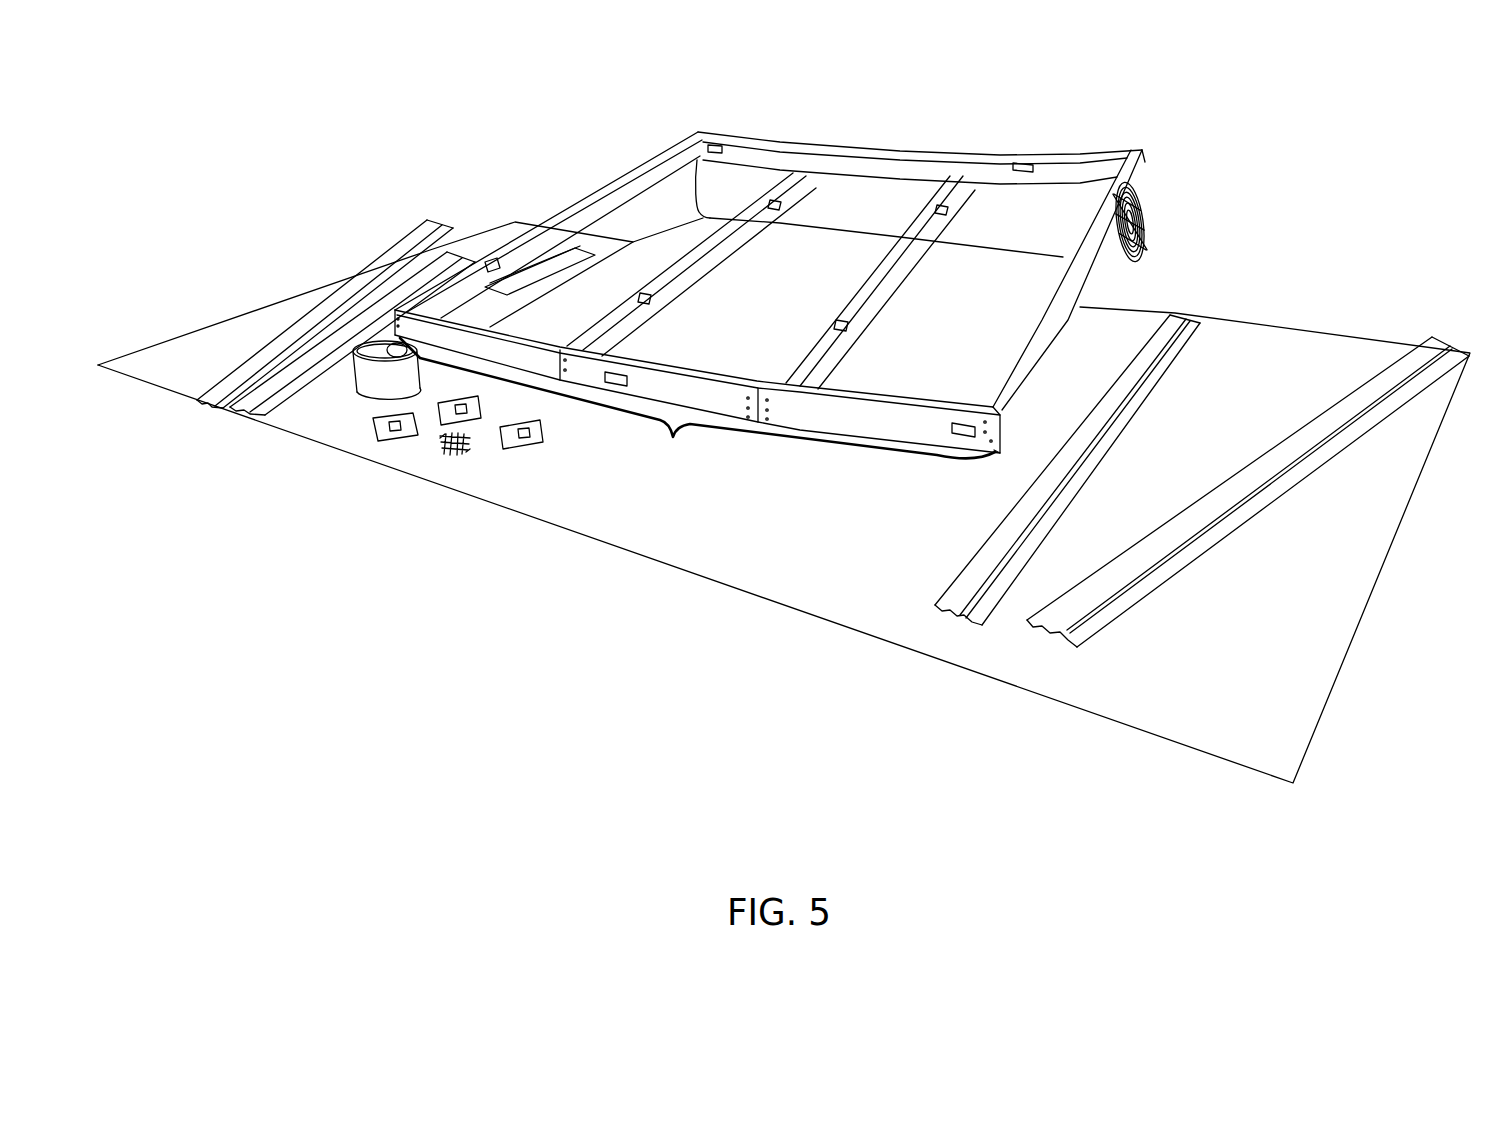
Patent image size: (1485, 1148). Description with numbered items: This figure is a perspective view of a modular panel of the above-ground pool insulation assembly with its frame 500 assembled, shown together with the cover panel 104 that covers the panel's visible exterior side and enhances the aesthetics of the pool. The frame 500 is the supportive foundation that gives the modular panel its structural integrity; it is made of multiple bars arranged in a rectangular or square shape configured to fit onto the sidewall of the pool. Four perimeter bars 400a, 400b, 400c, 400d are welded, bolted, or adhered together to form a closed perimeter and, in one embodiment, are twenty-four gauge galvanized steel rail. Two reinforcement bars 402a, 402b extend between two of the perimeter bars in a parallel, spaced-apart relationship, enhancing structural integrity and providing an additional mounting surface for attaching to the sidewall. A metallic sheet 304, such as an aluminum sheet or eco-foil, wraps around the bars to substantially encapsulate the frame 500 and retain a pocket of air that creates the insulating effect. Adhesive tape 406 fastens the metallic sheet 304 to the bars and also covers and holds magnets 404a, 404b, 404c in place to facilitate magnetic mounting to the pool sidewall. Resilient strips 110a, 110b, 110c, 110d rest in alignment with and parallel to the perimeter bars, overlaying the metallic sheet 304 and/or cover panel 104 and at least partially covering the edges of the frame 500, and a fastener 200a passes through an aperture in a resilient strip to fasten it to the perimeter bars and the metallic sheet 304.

The cover panel 104 is at (1095, 389).
The resilient strip 110a is at (273, 343).
The resilient strip 110b is at (288, 409).
The resilient strip 110c is at (1172, 352).
The resilient strip 110d is at (1298, 437).
The fastener 200a is at (452, 455).
The metallic sheet 304 is at (1013, 318).
The perimeter bar 400a is at (620, 172).
The perimeter bar 400b is at (1087, 264).
The perimeter bar 400c is at (898, 152).
The perimeter bar 400d is at (933, 441).
The reinforcement bar 402a is at (790, 177).
The reinforcement bar 402b is at (950, 180).
The magnet 404a is at (397, 440).
The magnet 404b is at (478, 408).
The magnet 404c is at (540, 438).
The adhesive tape 406 is at (378, 372).
The frame 500 is at (697, 404).